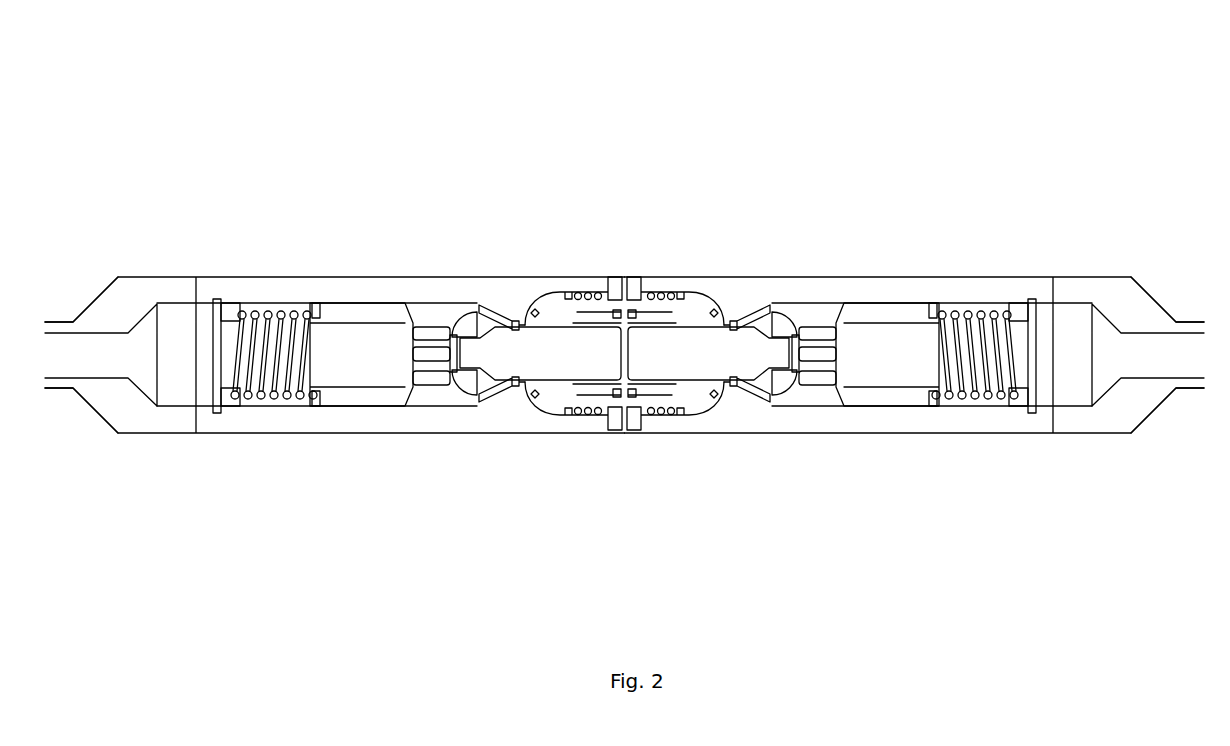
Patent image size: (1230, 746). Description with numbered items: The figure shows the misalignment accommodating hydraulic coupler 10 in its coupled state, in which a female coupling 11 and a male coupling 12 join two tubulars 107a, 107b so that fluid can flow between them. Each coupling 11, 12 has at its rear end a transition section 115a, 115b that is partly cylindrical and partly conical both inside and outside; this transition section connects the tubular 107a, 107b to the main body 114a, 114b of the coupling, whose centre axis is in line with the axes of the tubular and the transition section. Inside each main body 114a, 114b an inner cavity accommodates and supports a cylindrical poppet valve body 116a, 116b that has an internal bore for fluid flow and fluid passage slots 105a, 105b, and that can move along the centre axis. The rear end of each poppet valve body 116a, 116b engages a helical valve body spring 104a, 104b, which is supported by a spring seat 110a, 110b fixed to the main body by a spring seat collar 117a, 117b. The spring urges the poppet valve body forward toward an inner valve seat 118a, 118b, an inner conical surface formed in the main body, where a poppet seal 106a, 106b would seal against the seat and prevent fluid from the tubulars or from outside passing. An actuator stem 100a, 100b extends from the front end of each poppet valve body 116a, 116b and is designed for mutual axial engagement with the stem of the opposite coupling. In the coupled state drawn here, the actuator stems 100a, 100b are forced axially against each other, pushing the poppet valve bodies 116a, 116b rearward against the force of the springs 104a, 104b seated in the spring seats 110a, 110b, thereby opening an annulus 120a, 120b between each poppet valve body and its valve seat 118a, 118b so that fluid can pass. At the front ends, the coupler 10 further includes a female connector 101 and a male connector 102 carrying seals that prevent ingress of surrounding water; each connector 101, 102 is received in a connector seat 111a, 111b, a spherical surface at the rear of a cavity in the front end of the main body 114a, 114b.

The misalignment accommodating coupler 10 is at (647, 117).
The female coupling 11 is at (280, 273).
The male coupling 12 is at (1038, 272).
The actuator stem 100a is at (600, 340).
The actuator stem 100b is at (690, 345).
The female connector 101 is at (556, 312).
The male connector 102 is at (675, 318).
The helical valve body spring 104a is at (285, 345).
The helical valve body spring 104b is at (978, 348).
The fluid passage slots 105a is at (437, 350).
The fluid passage slots 105b is at (822, 347).
The poppet seal 106a is at (493, 327).
The poppet seal 106b is at (757, 330).
The tubular 107a is at (94, 360).
The tubular 107b is at (1180, 353).
The spring seat 110a is at (228, 398).
The spring seat 110b is at (1020, 400).
The connector seat 111a is at (537, 402).
The connector seat 111b is at (712, 400).
The main body 114a is at (245, 288).
The main body 114b is at (930, 287).
The transition section 115a is at (97, 297).
The transition section 115b is at (1154, 303).
The poppet valve body 116a is at (383, 393).
The poppet valve body 116b is at (905, 397).
The spring seat collar 117a is at (215, 410).
The spring seat collar 117b is at (1032, 408).
The inner valve seat 118a is at (495, 398).
The inner valve seat 118b is at (752, 397).
The annulus 120a is at (503, 308).
The annulus 120b is at (748, 305).